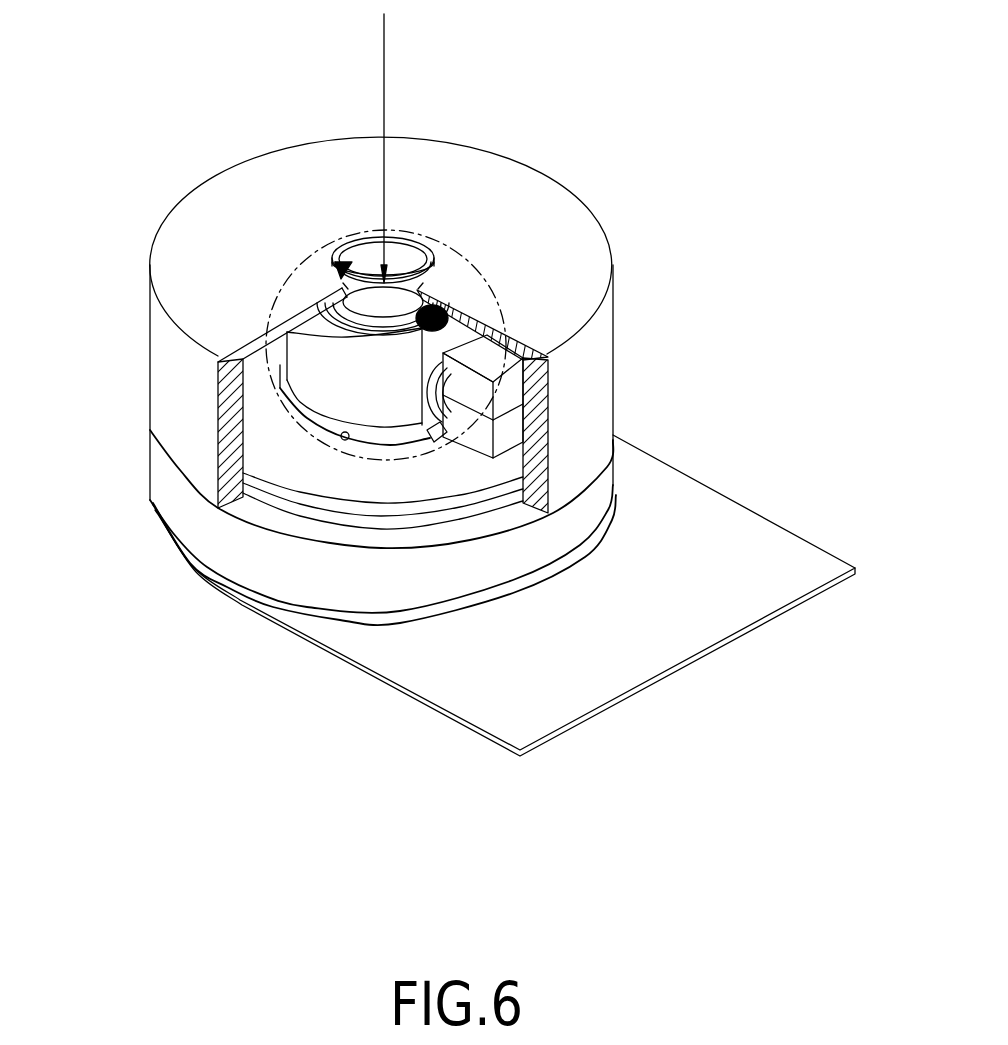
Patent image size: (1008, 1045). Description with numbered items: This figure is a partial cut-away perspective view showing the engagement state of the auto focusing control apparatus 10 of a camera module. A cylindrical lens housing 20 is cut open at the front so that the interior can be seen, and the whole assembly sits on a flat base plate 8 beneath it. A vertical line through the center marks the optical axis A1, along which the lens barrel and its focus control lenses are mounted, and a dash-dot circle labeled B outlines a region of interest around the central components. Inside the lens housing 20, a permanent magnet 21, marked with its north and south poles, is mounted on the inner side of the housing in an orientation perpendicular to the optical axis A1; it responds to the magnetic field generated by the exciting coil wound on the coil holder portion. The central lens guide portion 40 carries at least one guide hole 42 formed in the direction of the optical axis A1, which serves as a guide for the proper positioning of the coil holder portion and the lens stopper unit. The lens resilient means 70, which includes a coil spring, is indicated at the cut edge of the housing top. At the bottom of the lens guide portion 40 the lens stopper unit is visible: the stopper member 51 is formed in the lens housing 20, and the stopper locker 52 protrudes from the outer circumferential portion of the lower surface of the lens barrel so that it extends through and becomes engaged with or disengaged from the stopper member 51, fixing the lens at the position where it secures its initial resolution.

The auto focusing control apparatus 10 is at (526, 60).
The lens housing 20 is at (603, 213).
The permanent magnets 21 is at (522, 392).
The lens resilient means 70 is at (467, 310).
The guide hole 42 is at (448, 335).
The lens guide portion 40 is at (307, 373).
The stopper member 51 is at (338, 440).
The stopper locker 52 is at (428, 445).
The base plate 8 is at (447, 695).
The optical axis A1 is at (384, 36).
The magnetic field region B is at (443, 288).